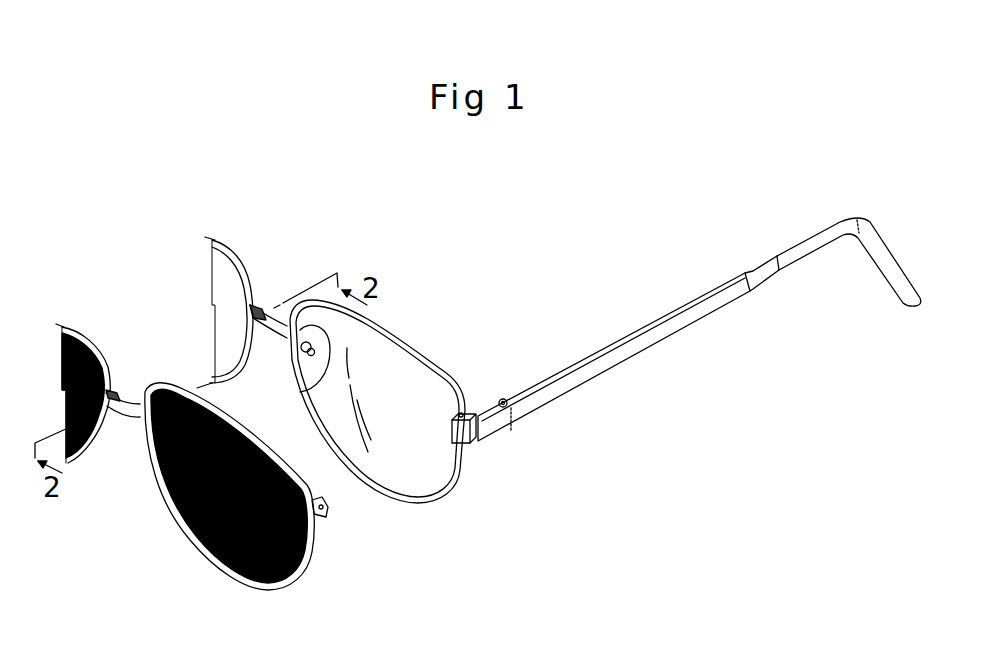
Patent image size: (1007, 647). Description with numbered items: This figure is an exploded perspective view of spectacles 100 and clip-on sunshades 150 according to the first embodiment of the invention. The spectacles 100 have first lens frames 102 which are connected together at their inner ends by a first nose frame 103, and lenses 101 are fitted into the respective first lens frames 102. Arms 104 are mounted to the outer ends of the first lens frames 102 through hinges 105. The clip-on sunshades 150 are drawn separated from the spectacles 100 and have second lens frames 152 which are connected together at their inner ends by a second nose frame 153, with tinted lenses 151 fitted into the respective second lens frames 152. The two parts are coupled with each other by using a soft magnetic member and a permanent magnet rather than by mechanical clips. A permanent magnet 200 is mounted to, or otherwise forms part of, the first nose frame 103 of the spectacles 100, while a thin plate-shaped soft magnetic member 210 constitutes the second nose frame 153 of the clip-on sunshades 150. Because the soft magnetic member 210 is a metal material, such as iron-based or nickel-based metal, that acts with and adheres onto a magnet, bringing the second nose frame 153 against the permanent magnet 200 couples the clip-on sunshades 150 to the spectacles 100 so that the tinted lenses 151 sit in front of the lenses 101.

The spectacles 100 is at (486, 281).
The lenses 101 is at (417, 487).
The first lens frames 102 is at (460, 477).
The first nose frame 103 is at (270, 342).
The arms 104 is at (630, 357).
The hinges 105 is at (504, 398).
The clip-on sunshades 150 is at (132, 502).
The tinted lenses 151 is at (213, 557).
The second lens frames 152 is at (318, 558).
The second nose frame 153 is at (127, 433).
The permanent magnet 200 is at (268, 303).
The soft magnetic member 210 is at (121, 395).